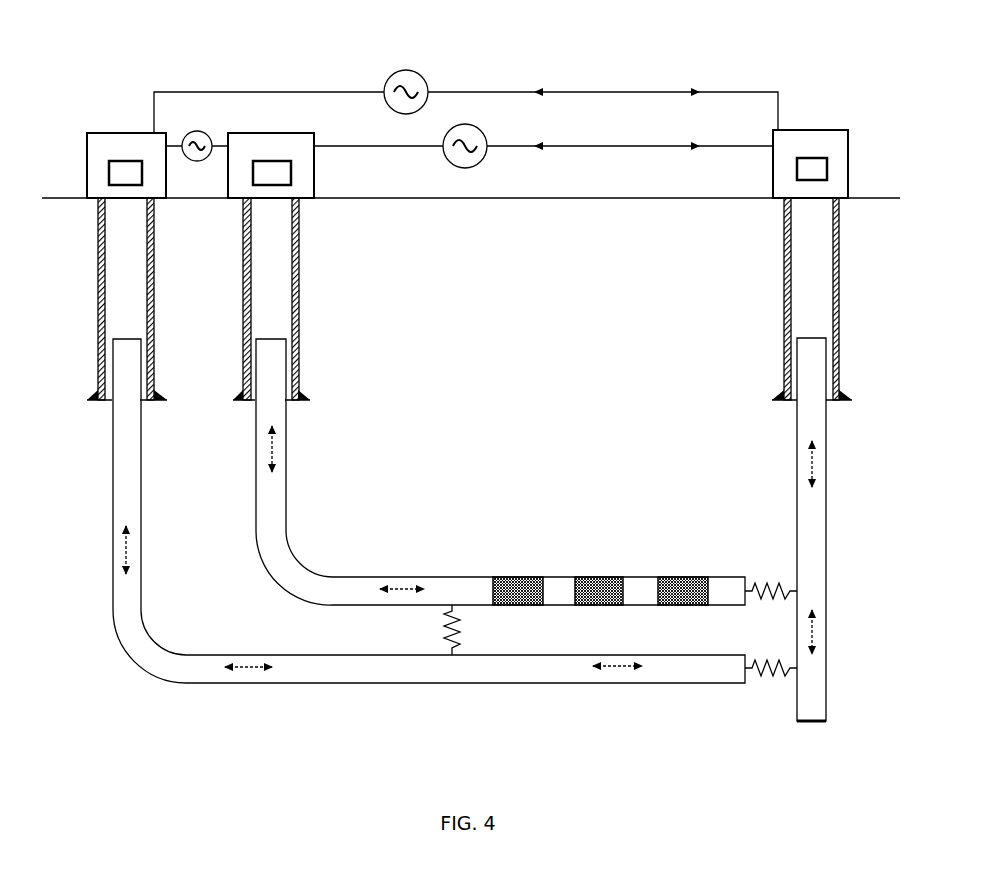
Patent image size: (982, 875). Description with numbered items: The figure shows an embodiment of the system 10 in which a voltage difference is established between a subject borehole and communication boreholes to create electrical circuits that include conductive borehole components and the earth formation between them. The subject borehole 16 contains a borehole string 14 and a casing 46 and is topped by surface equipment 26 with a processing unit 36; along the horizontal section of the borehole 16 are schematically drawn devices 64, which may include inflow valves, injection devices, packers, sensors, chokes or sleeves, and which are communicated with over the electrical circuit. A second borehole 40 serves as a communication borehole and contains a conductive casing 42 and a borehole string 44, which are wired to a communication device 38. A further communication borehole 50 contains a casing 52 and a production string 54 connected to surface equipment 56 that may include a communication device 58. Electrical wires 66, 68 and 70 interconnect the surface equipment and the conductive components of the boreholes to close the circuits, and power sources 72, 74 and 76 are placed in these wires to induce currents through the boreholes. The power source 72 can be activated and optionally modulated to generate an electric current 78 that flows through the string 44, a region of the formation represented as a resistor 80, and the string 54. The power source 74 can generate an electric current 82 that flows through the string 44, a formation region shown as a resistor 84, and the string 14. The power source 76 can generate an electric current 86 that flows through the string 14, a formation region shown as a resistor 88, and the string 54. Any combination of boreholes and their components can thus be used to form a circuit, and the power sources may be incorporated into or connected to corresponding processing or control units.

The system 10 is at (539, 23).
The borehole string 14 is at (280, 531).
The borehole 16 is at (278, 283).
The surface equipment 26 is at (312, 190).
The processing unit 36 is at (292, 173).
The communication device 38 is at (820, 172).
The second borehole 40 is at (800, 250).
The casing 42 is at (784, 280).
The borehole string 44 is at (805, 407).
The casing 46 is at (838, 134).
The borehole 50 is at (118, 241).
The casing 52 is at (98, 287).
The production string 54 is at (131, 456).
The surface equipment 56 is at (100, 137).
The communication device 58 is at (112, 173).
The devices 64 is at (592, 577).
The electrical wire 66 is at (320, 91).
The electrical wire 68 is at (401, 148).
The electrical wire 70 is at (220, 149).
The power source 72 is at (416, 74).
The power source 74 is at (481, 161).
The power source 76 is at (196, 131).
The electric current 78 is at (240, 660).
The resistor 80 is at (768, 660).
The electric current 82 is at (274, 453).
The resistor 84 is at (766, 584).
The electric current 86 is at (128, 551).
The resistor 88 is at (446, 625).